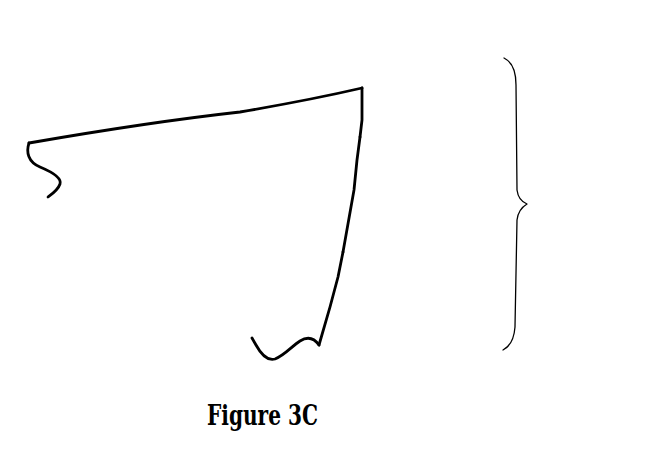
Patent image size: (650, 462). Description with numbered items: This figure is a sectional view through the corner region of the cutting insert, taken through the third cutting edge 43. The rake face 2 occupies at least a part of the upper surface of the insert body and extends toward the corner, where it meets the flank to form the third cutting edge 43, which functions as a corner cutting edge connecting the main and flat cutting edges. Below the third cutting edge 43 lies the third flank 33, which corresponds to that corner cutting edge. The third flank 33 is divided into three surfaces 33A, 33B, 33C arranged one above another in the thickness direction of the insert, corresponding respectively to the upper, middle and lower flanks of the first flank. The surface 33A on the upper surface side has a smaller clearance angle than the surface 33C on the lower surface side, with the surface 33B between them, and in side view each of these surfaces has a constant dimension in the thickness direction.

The rake face 2 is at (172, 120).
The third cutting edge 43 is at (375, 186).
The third flank 33 is at (530, 204).
The surface on the upper surface side 33A is at (363, 99).
The middle surface of the third flank 33B is at (361, 137).
The surface on the lower surface side 33C is at (343, 252).